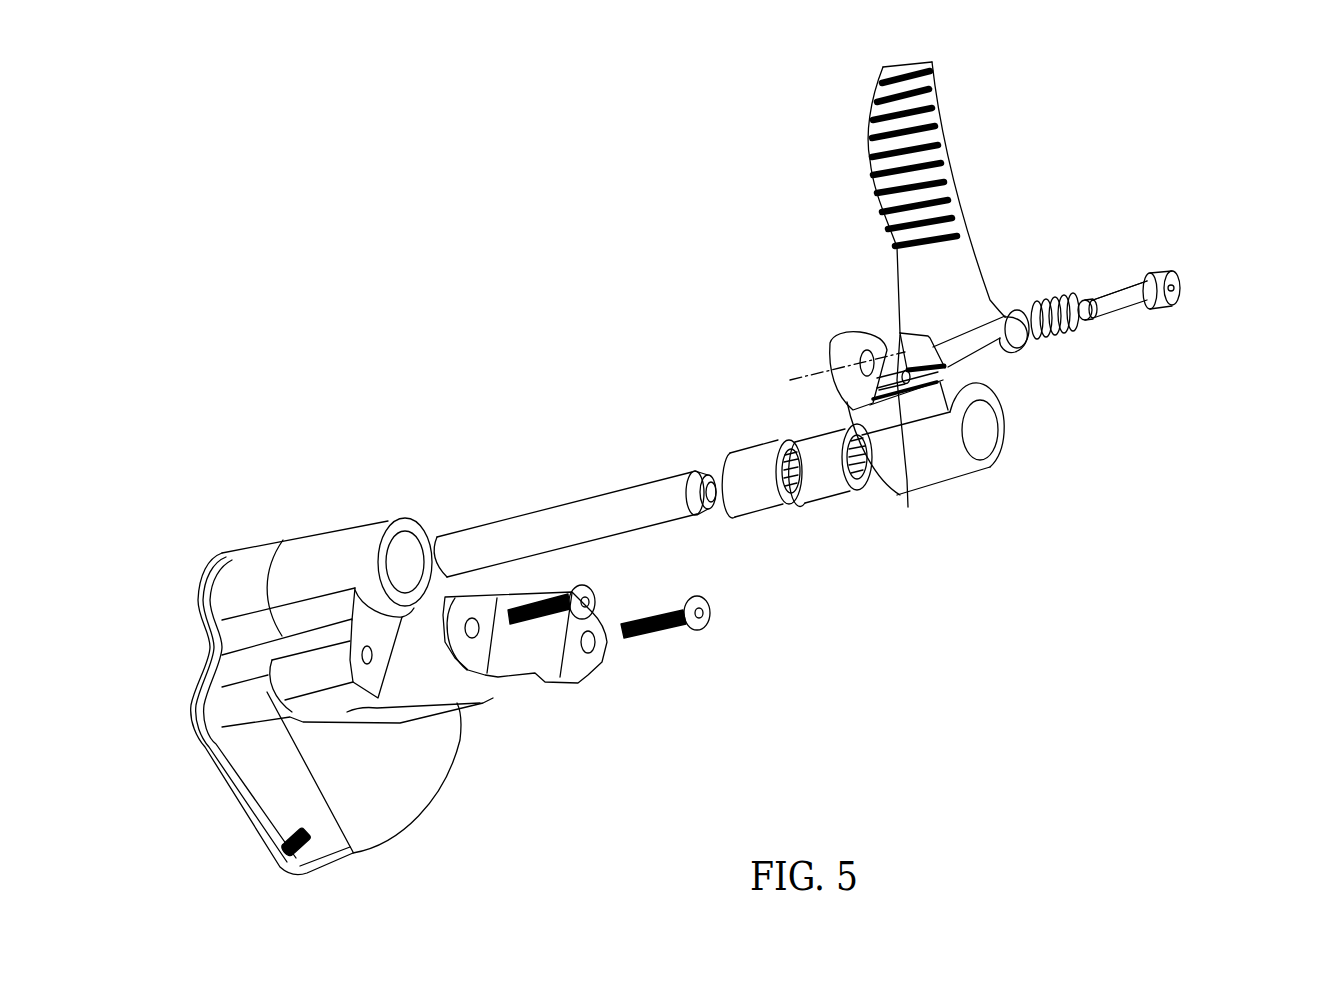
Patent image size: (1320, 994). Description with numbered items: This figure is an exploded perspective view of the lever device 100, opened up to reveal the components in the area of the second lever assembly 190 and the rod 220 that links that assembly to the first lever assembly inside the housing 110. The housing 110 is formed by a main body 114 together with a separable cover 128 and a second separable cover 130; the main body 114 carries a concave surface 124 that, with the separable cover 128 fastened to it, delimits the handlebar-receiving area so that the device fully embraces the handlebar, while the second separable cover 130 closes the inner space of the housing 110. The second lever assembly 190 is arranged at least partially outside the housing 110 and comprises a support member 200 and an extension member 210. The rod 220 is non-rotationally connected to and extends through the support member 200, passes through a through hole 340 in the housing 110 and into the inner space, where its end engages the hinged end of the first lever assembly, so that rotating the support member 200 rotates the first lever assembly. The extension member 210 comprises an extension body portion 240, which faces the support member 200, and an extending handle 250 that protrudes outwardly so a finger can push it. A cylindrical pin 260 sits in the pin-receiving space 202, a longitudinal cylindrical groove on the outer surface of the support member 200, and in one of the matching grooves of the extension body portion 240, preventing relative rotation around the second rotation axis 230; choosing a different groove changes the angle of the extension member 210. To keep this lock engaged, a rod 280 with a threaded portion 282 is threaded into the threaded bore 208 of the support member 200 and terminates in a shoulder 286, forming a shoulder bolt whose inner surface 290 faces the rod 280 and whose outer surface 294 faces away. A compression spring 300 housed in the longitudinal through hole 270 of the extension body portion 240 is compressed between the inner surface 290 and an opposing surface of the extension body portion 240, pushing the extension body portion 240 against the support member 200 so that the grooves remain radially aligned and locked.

The lever device 100 is at (526, 188).
The housing 110 is at (338, 528).
The main body 114 is at (400, 797).
The concave surface 124 is at (422, 678).
The separable cover 128 is at (588, 668).
The second separable cover 130 is at (218, 778).
The second lever assembly 190 is at (850, 213).
The support member 200 is at (945, 470).
The pin-receiving space 202 is at (922, 340).
The threaded bore 208 is at (890, 378).
The extension member 210 is at (976, 215).
The rod 220 is at (563, 500).
The second rotation axis 230 is at (812, 375).
The extension body portion 240 is at (1008, 392).
The extending handle 250 is at (943, 112).
The pin 260 is at (905, 447).
The longitudinal through hole 270 is at (1012, 328).
The rod 280 is at (1102, 300).
The threaded portion 282 is at (1083, 315).
The shoulder 286 is at (1152, 278).
The inner surface 290 is at (1143, 314).
The outer surface 294 is at (1178, 282).
The spring 300 is at (1056, 337).
The through hole 340 is at (400, 553).